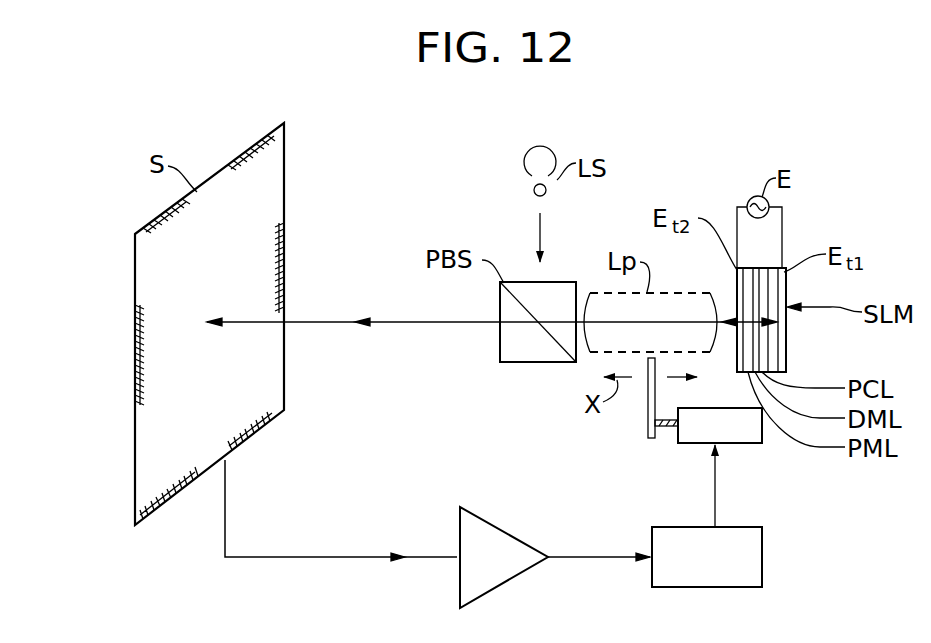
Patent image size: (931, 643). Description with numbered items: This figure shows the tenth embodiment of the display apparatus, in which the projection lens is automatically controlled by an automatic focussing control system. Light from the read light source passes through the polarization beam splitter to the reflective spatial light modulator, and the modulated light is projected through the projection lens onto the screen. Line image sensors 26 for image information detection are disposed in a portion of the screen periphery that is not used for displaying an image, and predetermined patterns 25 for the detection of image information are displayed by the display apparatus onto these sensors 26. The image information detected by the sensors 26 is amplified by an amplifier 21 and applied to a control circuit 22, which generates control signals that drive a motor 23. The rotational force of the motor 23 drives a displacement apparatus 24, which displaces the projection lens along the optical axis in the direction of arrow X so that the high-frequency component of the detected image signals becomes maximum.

The amplifier 21 is at (497, 526).
The control circuit 22 is at (764, 558).
The motor 23 is at (752, 443).
The displacement apparatus 24 is at (669, 427).
The predetermined patterns 25 is at (268, 148).
The line image sensors 26 is at (229, 167).